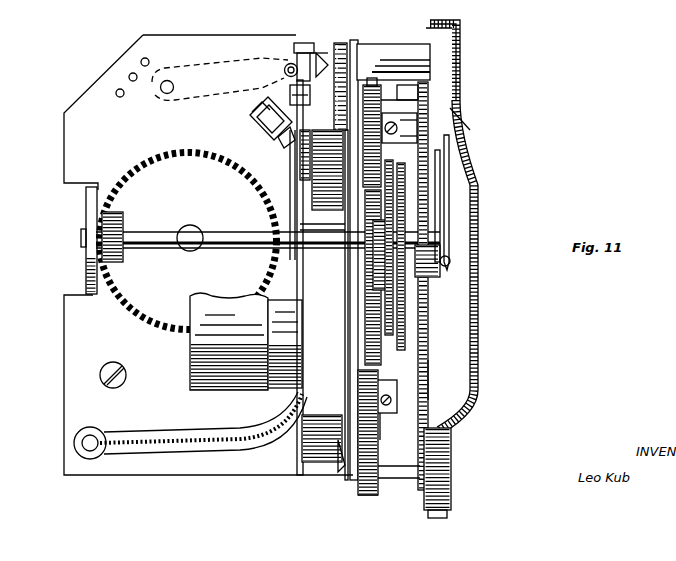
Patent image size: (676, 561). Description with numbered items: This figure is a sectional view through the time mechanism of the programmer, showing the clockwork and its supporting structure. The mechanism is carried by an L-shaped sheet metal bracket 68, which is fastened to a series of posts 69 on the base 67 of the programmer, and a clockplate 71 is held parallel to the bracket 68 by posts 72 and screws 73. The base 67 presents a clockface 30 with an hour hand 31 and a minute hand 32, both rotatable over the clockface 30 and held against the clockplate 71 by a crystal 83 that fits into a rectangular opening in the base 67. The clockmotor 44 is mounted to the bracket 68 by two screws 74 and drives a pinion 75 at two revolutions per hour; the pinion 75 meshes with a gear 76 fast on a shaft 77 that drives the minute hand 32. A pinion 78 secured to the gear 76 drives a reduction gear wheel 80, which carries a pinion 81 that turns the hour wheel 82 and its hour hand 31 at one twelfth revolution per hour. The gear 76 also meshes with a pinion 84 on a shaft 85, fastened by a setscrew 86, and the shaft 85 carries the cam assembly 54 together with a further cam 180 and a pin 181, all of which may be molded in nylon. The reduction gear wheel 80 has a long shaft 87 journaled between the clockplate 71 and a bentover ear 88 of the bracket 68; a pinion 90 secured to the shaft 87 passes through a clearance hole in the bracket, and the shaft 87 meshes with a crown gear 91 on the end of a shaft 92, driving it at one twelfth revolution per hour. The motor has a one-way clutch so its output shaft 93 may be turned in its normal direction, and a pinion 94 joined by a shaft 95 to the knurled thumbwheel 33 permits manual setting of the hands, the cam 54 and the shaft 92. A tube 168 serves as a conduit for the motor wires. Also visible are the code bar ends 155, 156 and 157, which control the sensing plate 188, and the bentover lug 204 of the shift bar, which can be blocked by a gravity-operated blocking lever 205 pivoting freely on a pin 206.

The clockface 30 is at (428, 337).
The hour hand 31 is at (440, 206).
The minute hand 32 is at (449, 160).
The knurled thumbwheel 33 is at (428, 515).
The clockmotor 44 is at (334, 308).
The cam assembly 54 is at (340, 42).
The base 67 is at (462, 40).
The L-shaped sheet metal bracket 68 is at (126, 155).
The posts 69 is at (388, 50).
The clockplate 71 is at (428, 368).
The posts 72 is at (399, 92).
The screws 73 is at (336, 456).
The screws 74 is at (344, 426).
The pinion 75 is at (372, 428).
The gear 76 is at (390, 348).
The shaft 77 is at (452, 268).
The pinion 78 is at (364, 278).
The reduction gear wheel 80 is at (391, 178).
The pinion 81 is at (399, 240).
The hour wheel 82 is at (394, 388).
The crystal 83 is at (478, 308).
The pinion 84 is at (370, 78).
The shaft 85 is at (436, 129).
The setscrew 86 is at (399, 126).
The long shaft 87 is at (238, 250).
The bentover ear 88 is at (85, 221).
The pinion 90 is at (124, 258).
The crown gear 91 is at (224, 215).
The shaft 92 is at (186, 232).
The output shaft 93 is at (358, 386).
The pinion 94 is at (358, 492).
The shaft 95 is at (398, 480).
The bar end 155 is at (256, 127).
The bar end 156 is at (276, 139).
The bar end 157 is at (290, 164).
The tube 168 is at (74, 444).
The cam 180 is at (306, 42).
The pin 181 is at (285, 90).
The sensing plate 188 is at (255, 108).
The bentover portion 204 is at (289, 62).
The blocking lever 205 is at (194, 77).
The pin 206 is at (162, 92).